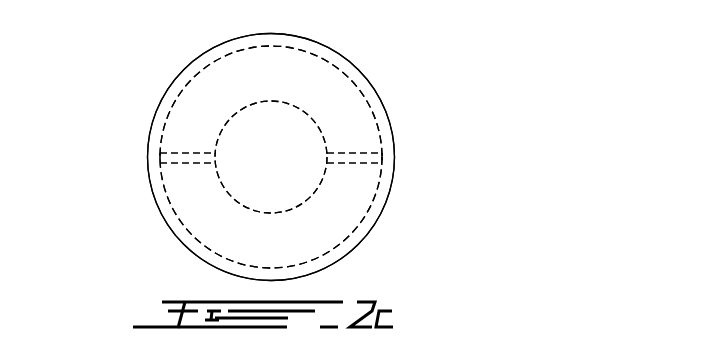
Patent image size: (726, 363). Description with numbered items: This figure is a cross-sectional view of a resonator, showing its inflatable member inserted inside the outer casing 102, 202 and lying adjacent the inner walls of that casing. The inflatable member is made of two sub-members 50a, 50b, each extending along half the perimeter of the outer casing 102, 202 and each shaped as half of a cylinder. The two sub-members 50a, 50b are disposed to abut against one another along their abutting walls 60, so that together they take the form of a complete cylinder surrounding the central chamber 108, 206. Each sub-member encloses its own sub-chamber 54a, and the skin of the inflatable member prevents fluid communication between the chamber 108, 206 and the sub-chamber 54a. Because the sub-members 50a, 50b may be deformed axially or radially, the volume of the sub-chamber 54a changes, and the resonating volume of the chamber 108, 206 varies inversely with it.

The outer casing 102 is at (355, 66).
The outer casing 202 is at (271, 157).
The sub-member 50a is at (347, 217).
The sub-member 50b is at (372, 130).
The sub-chamber 54a is at (290, 88).
The abutting walls 60 is at (177, 162).
The chamber 108 is at (307, 172).
The chamber 206 is at (271, 157).